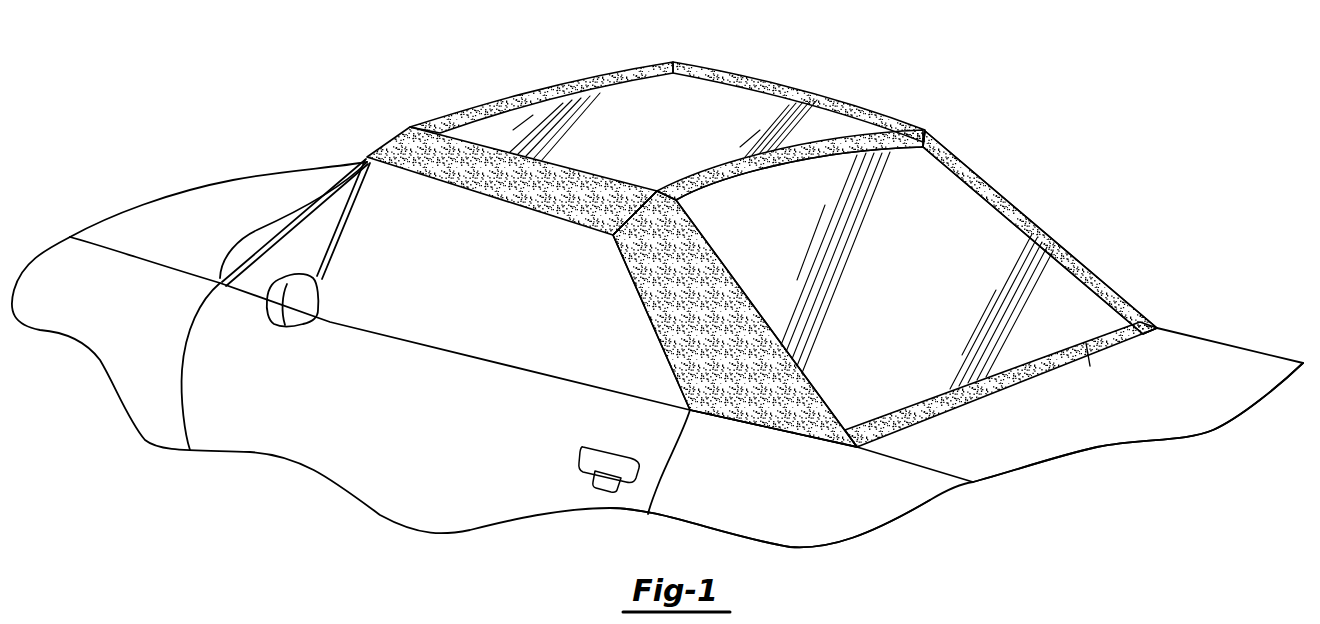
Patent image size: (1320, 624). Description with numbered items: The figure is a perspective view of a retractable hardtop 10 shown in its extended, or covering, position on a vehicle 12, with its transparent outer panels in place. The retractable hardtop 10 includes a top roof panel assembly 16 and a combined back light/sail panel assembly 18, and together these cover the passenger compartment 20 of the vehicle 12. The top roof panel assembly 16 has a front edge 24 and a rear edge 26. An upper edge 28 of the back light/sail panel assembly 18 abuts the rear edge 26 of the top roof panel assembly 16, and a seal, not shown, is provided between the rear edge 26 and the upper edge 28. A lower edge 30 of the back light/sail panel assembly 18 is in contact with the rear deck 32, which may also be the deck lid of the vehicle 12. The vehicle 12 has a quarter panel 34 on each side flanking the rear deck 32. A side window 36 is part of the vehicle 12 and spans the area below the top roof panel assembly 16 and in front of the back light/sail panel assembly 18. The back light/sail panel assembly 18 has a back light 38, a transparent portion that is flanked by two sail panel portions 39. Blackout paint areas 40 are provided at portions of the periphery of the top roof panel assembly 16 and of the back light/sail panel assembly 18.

The retractable hardtop 10 is at (762, 237).
The vehicle 12 is at (161, 197).
The top roof panel assembly 16 is at (717, 84).
The back light/sail panel assembly 18 is at (984, 211).
The passenger compartment 20 is at (596, 281).
The front edge 24 is at (543, 92).
The rear edge 26 is at (790, 159).
The upper edge 28 is at (790, 156).
The lower edge 30 is at (1087, 354).
The rear deck 32 is at (1207, 353).
The quarter panel 34 is at (800, 508).
The side window 36 is at (540, 347).
The back light 38 is at (957, 182).
The sail panel portions 39 is at (750, 303).
The blackout paint areas 40 is at (497, 194).